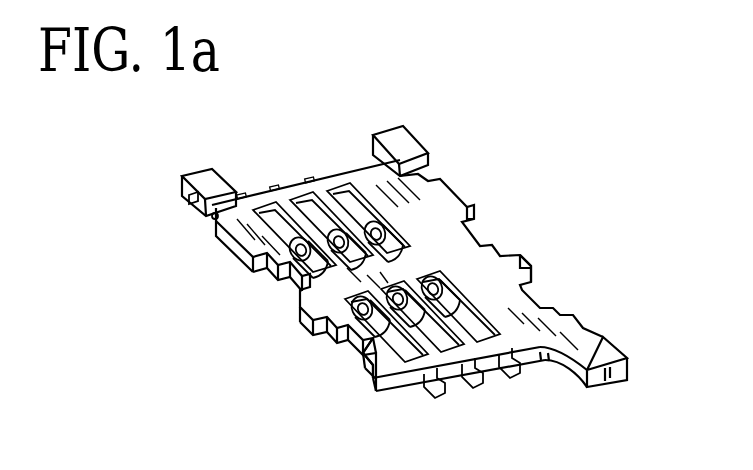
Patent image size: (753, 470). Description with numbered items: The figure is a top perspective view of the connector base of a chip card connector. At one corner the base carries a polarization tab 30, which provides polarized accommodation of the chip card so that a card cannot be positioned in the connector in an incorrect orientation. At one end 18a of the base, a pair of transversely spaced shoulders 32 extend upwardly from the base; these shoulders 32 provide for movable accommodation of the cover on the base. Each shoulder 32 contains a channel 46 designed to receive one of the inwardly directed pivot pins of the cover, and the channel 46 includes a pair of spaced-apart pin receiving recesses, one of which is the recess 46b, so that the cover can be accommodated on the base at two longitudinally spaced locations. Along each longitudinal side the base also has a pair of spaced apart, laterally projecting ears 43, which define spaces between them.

The end 18a is at (343, 164).
The shoulders 32 is at (410, 148).
The polarization tab 30 is at (607, 341).
The channels 46 is at (190, 200).
The pin receiving recess 46b is at (215, 219).
The ears 43 is at (517, 257).